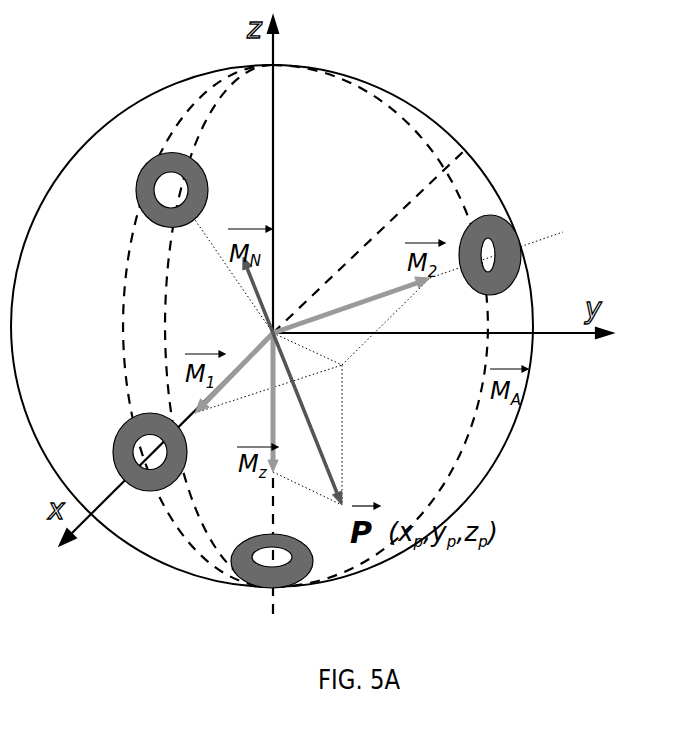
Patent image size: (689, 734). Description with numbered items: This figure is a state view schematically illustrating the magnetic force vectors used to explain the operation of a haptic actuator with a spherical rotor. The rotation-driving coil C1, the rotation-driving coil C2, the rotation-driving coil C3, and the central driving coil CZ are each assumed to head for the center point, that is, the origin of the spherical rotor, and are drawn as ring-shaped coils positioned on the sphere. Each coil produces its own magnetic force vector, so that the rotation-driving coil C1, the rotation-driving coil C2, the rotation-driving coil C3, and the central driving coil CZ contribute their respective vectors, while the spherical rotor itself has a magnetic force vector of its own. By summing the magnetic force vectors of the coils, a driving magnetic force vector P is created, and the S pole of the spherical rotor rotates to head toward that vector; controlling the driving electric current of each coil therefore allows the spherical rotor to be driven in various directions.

The rotation-driving coil C1 is at (123, 433).
The rotation-driving coil C2 is at (500, 218).
The rotation-driving coil C3 is at (147, 170).
The central driving coil CZ is at (252, 586).